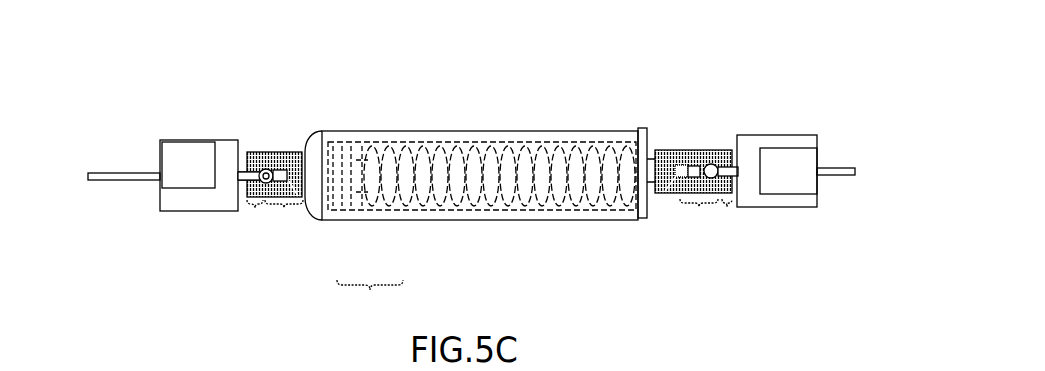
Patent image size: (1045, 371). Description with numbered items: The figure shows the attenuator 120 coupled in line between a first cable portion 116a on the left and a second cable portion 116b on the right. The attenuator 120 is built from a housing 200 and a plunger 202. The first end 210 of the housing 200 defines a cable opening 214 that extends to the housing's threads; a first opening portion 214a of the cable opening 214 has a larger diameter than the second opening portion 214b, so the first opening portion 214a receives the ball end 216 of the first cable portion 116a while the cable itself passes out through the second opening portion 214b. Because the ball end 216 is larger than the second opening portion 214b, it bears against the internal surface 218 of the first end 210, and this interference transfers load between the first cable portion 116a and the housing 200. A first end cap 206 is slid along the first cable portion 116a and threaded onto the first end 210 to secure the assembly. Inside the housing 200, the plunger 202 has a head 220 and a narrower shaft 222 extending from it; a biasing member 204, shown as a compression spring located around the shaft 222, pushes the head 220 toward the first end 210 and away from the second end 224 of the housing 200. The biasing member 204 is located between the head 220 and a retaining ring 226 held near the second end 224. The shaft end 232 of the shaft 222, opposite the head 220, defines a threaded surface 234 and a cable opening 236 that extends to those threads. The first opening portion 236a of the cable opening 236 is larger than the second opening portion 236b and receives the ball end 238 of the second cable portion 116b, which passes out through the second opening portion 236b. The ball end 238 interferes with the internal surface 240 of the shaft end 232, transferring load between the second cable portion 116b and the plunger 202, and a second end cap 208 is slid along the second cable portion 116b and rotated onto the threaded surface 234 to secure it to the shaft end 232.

The attenuator 120 is at (556, 94).
The first cable portion 116a is at (103, 181).
The second cable portion 116b is at (849, 172).
The housing 200 is at (485, 130).
The plunger 202 is at (370, 294).
The biasing member 204 is at (500, 200).
The first end cap 206 is at (195, 196).
The second end cap 208 is at (797, 158).
The first end 210 is at (246, 152).
The cable opening 214 is at (298, 197).
The first opening portion 214a is at (284, 215).
The second opening portion 214b is at (252, 215).
The ball end 216 is at (270, 152).
The internal surface 218 is at (254, 152).
The head 220 is at (345, 199).
The shaft 222 is at (382, 196).
The second end 224 is at (640, 132).
The retaining ring 226 is at (641, 216).
The shaft end 232 is at (735, 150).
The threaded surface 234 is at (667, 150).
The cable opening 236 is at (668, 194).
The first opening portion 236a is at (698, 213).
The second opening portion 236b is at (733, 213).
The ball end 238 is at (705, 150).
The internal surface 240 is at (297, 152).